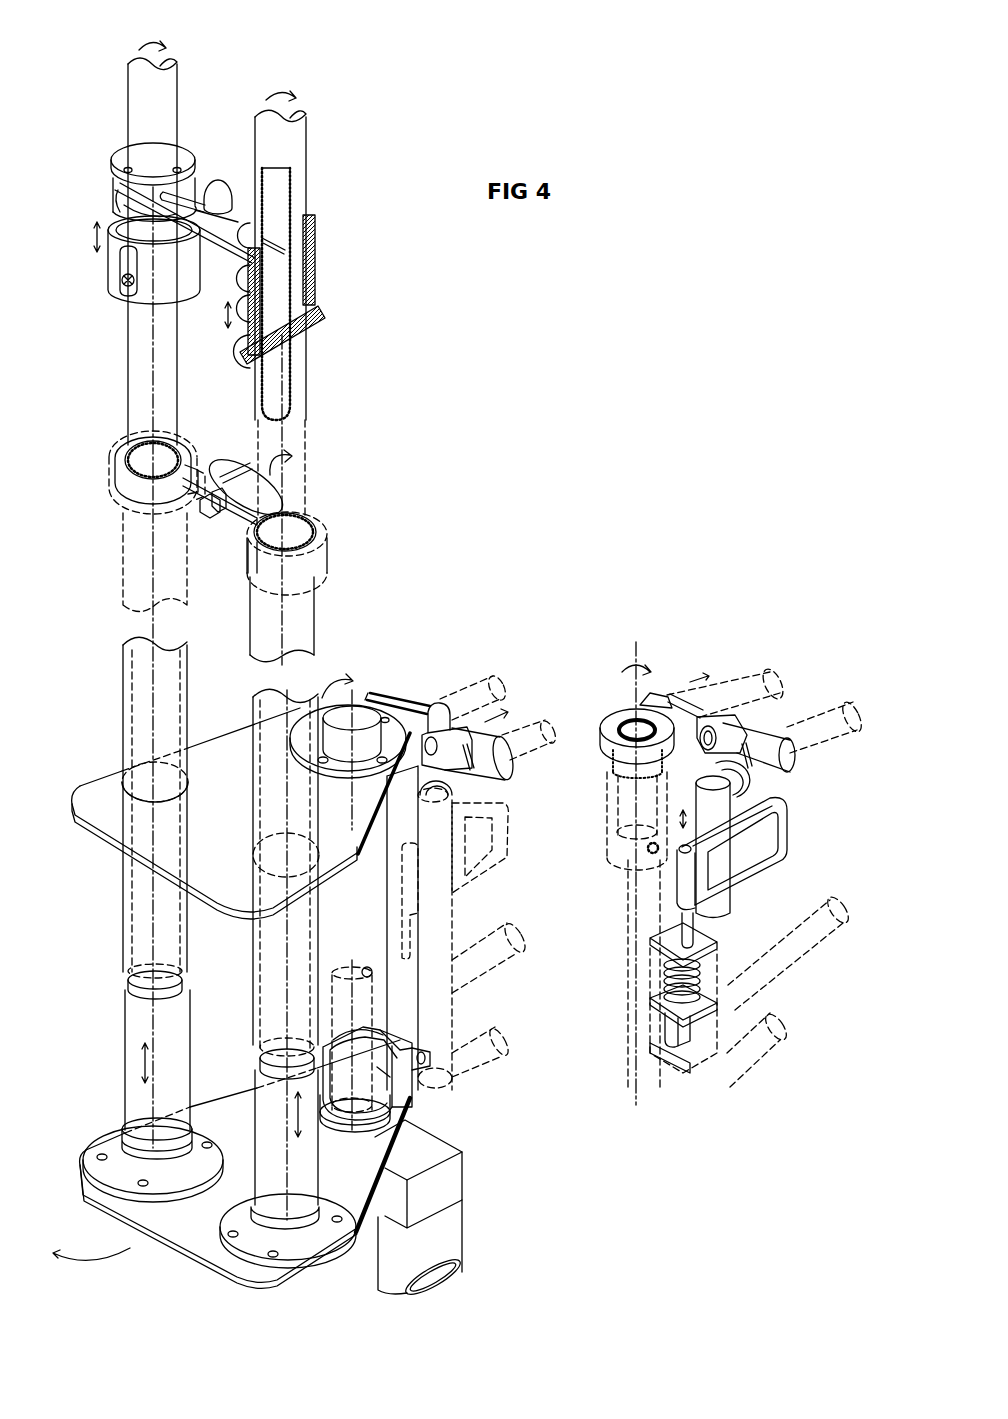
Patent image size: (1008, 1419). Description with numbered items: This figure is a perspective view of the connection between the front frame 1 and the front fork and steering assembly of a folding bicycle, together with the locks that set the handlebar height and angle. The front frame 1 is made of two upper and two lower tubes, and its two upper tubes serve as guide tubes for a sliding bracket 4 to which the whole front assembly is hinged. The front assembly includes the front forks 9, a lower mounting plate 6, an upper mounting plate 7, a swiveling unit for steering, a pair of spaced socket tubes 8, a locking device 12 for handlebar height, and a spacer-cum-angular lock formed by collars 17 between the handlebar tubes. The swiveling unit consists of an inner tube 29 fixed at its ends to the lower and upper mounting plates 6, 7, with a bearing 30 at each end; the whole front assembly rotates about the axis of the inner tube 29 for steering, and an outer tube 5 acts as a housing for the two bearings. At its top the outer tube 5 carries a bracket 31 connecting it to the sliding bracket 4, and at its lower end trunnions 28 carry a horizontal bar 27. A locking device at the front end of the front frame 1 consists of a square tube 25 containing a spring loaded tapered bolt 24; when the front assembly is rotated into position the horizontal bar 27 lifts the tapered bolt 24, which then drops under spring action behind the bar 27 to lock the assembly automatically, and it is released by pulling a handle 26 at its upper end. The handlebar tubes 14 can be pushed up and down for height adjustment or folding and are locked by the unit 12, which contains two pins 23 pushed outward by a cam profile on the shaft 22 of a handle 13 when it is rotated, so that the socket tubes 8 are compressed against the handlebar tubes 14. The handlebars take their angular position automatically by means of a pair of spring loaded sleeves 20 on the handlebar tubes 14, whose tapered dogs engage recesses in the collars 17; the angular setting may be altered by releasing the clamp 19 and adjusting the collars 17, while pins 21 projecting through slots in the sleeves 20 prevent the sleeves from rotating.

The front frame 1 is at (522, 938).
The sliding bracket 4 is at (437, 704).
The outer tube 5 is at (390, 905).
The lower mounting plate 6 is at (217, 1277).
The upper mounting plate 7 is at (107, 850).
The socket tubes 8 is at (123, 1043).
The front forks 9 is at (377, 1283).
The locking device 12 is at (112, 482).
The handle 13 is at (285, 500).
The handlebar tubes 14 is at (125, 373).
The collars 17 is at (113, 170).
The clamp 19 is at (218, 177).
The spring loaded sleeves 20 is at (112, 287).
The pins 21 is at (285, 340).
The shaft 22 is at (240, 490).
The pins 23 is at (233, 520).
The spring loaded tapered bolt 24 is at (650, 1003).
The square tube 25 is at (688, 1074).
The handle 26 is at (788, 820).
The horizontal bar 27 is at (410, 1038).
The trunnions 28 is at (417, 1083).
The inner tube 29 is at (352, 968).
The bearing 30 is at (353, 1123).
The bracket 31 is at (380, 700).